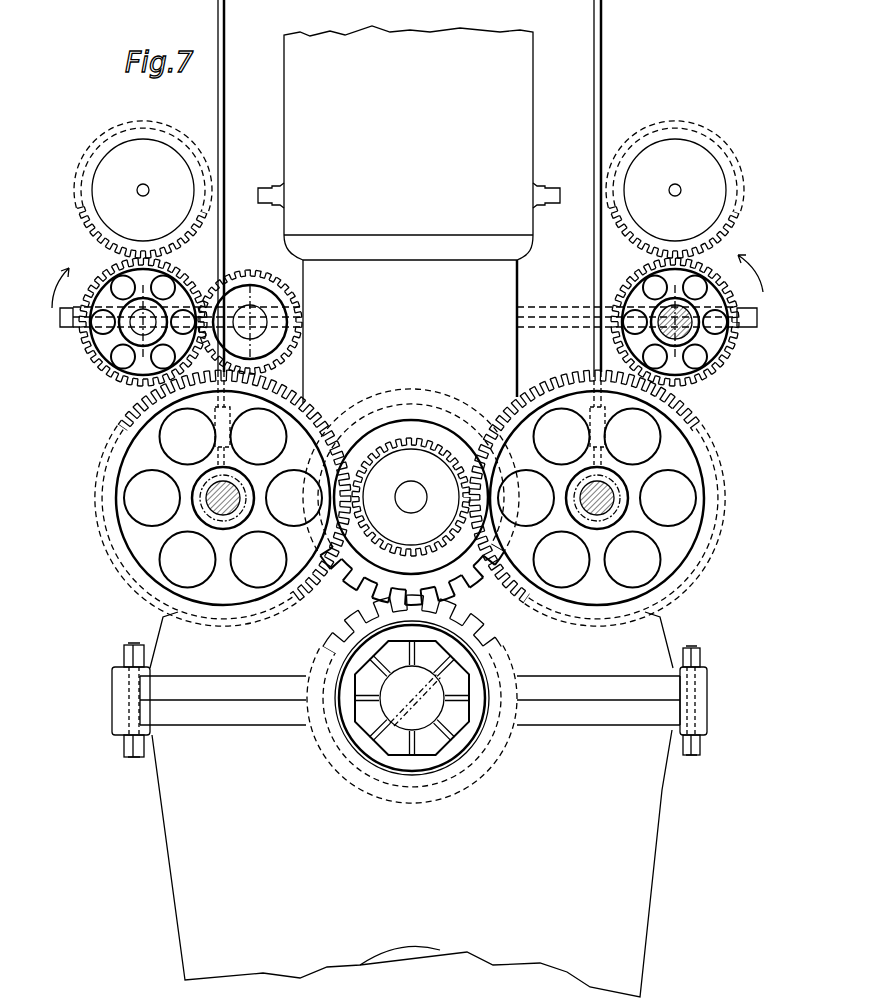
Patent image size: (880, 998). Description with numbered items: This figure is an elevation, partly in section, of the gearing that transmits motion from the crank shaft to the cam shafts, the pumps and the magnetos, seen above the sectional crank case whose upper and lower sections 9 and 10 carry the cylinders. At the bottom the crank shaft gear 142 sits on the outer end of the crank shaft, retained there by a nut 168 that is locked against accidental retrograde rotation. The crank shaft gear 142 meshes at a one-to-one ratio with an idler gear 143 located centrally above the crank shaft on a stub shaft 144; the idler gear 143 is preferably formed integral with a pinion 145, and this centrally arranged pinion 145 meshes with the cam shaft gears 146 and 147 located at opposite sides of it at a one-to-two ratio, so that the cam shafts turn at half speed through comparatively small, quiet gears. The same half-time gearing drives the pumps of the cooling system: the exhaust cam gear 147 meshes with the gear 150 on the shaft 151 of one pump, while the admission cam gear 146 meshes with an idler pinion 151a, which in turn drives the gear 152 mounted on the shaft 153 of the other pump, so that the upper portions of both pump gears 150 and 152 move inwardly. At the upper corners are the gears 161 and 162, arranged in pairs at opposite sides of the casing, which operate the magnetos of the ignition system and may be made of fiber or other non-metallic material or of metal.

The upper crank case section 9 is at (409, 700).
The lower crank case section 10 is at (411, 804).
The crank shaft gear 142 is at (358, 638).
The idler gear 143 is at (460, 567).
The stub shaft 144 is at (420, 477).
The pinion 145 is at (395, 437).
The cam shaft gear 146 is at (307, 403).
The cam shaft gear 147 is at (693, 412).
The pump gear 150 is at (725, 363).
The pump shaft 151 is at (690, 317).
The idler pinion 151a is at (303, 337).
The pump gear 152 is at (115, 345).
The pump shaft 153 is at (140, 329).
The magneto gear 161 is at (409, 189).
The magneto gear 162 is at (90, 282).
The nut 168 is at (373, 717).